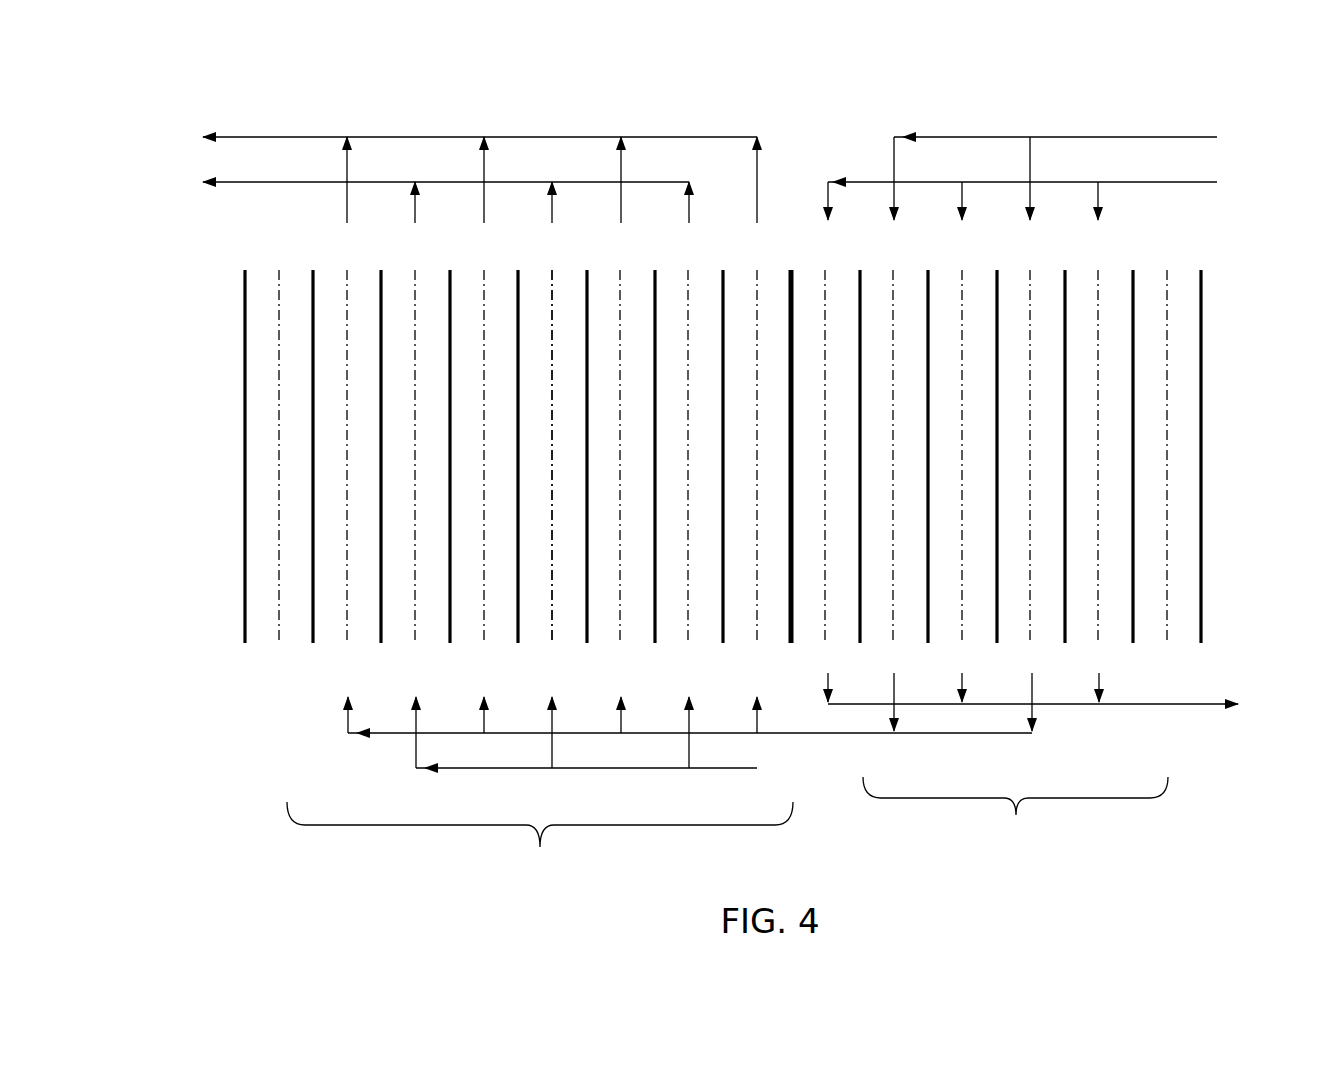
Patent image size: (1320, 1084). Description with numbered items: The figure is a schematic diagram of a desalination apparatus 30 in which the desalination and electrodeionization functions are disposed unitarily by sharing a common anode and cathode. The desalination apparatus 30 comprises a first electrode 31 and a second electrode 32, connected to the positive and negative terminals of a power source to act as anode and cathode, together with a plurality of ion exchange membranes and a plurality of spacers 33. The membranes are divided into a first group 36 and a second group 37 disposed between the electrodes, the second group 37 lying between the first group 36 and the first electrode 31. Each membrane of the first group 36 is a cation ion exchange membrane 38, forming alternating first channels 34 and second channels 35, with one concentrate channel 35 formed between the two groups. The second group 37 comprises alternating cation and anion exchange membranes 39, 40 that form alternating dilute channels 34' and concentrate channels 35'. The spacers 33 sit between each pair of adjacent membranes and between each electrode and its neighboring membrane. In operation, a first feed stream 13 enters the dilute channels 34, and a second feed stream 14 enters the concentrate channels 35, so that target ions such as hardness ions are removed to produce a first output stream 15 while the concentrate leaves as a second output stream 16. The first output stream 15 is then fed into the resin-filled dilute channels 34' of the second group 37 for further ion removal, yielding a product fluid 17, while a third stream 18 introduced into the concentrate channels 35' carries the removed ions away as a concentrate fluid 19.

The desalination apparatus 30 is at (205, 130).
The first electrode 31 is at (245, 420).
The second electrode 32 is at (1203, 355).
The spacer 33 is at (278, 612).
The first channel 34 is at (944, 473).
The second channel 35 is at (949, 473).
The first channel of the second group 34' is at (533, 425).
The second channel of the second group 35' is at (578, 425).
The first group 36 is at (1015, 817).
The second group 37 is at (540, 843).
The cation ion exchange membrane 38 is at (860, 290).
The cation exchange membrane 39 is at (312, 612).
The anion exchange membrane 40 is at (380, 597).
The first feed stream 13 is at (1185, 137).
The second feed stream 14 is at (1200, 182).
The first output stream 15 is at (928, 733).
The second output stream 16 is at (1175, 705).
The product fluid 17 is at (260, 136).
The third stream 18 is at (598, 768).
The concentrate fluid 19 is at (232, 182).